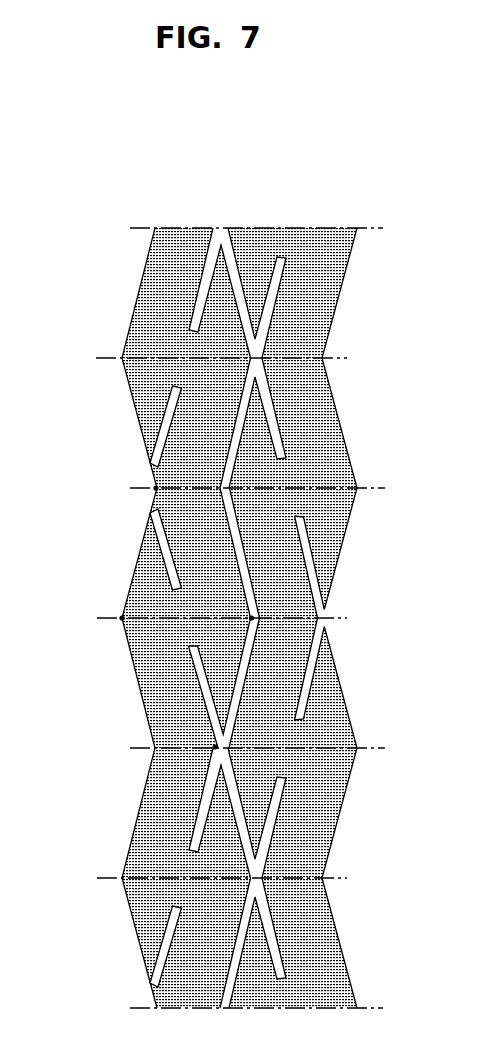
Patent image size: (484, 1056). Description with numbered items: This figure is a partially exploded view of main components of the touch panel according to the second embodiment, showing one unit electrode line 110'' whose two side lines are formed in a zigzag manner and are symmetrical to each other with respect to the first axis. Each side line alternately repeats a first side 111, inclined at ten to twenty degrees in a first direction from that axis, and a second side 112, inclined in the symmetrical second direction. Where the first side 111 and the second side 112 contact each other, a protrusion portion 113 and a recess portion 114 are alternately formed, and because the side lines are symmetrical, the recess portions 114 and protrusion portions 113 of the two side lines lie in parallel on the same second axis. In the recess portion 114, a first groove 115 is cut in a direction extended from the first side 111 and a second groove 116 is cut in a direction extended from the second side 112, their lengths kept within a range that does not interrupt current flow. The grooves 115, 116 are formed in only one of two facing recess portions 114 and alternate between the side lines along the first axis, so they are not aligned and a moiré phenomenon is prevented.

The unit electrode line 110'' is at (239, 575).
The first side 111 is at (66, 558).
The second side 112 is at (112, 414).
The protrusion portion 113 is at (252, 618).
The recess portion 114 is at (156, 488).
The first groove 115 is at (202, 812).
The second groove 116 is at (203, 684).